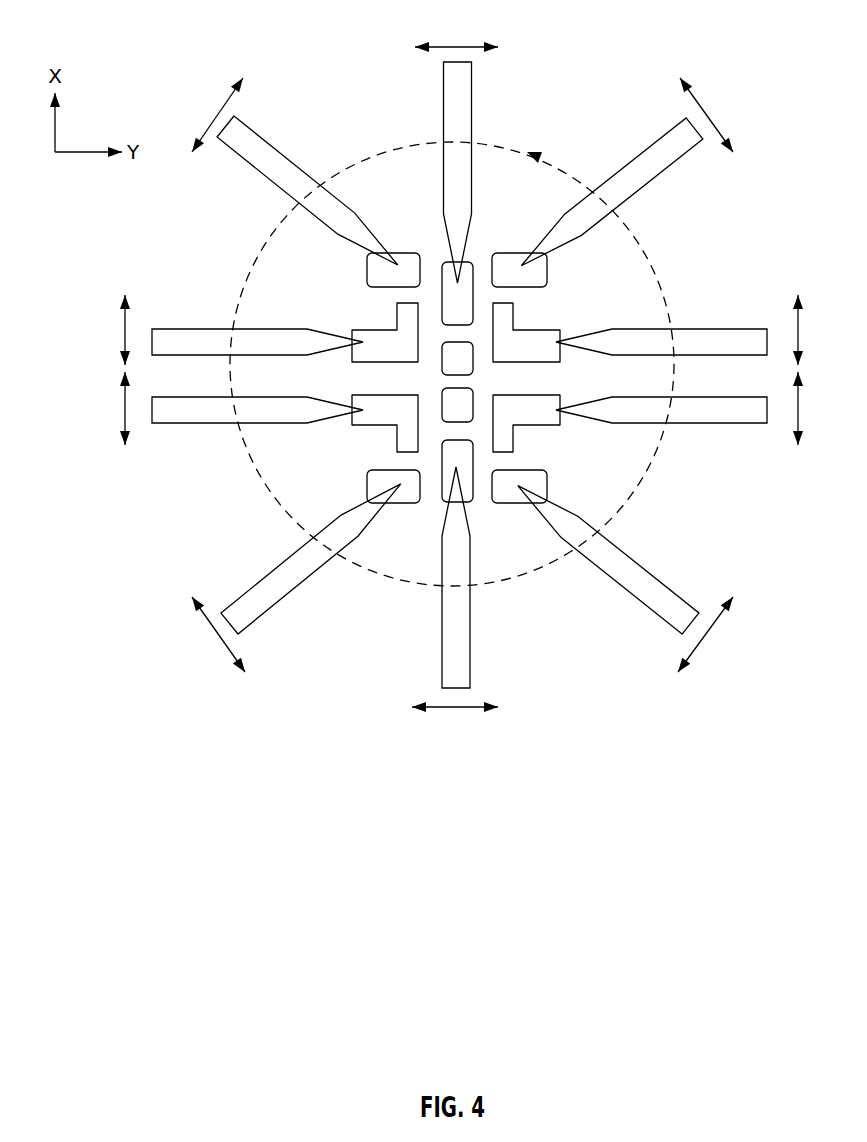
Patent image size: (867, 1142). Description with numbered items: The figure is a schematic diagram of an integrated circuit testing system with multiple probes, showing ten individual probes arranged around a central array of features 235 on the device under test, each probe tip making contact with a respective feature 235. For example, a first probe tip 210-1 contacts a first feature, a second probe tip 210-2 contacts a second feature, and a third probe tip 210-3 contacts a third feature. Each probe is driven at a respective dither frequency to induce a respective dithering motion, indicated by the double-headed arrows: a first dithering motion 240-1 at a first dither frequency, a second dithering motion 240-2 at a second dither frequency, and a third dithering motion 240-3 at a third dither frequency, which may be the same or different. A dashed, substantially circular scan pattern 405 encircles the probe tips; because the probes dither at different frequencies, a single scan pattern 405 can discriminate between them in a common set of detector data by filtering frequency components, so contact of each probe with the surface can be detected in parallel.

The first probe tip 210-1 is at (327, 422).
The second probe tip 210-2 is at (392, 503).
The third probe tip 210-3 is at (602, 183).
The feature 235 is at (546, 474).
The first dithering motion 240-1 is at (125, 403).
The second dithering motion 240-2 is at (210, 620).
The third dithering motion 240-3 is at (703, 103).
The scan pattern 405 is at (655, 265).